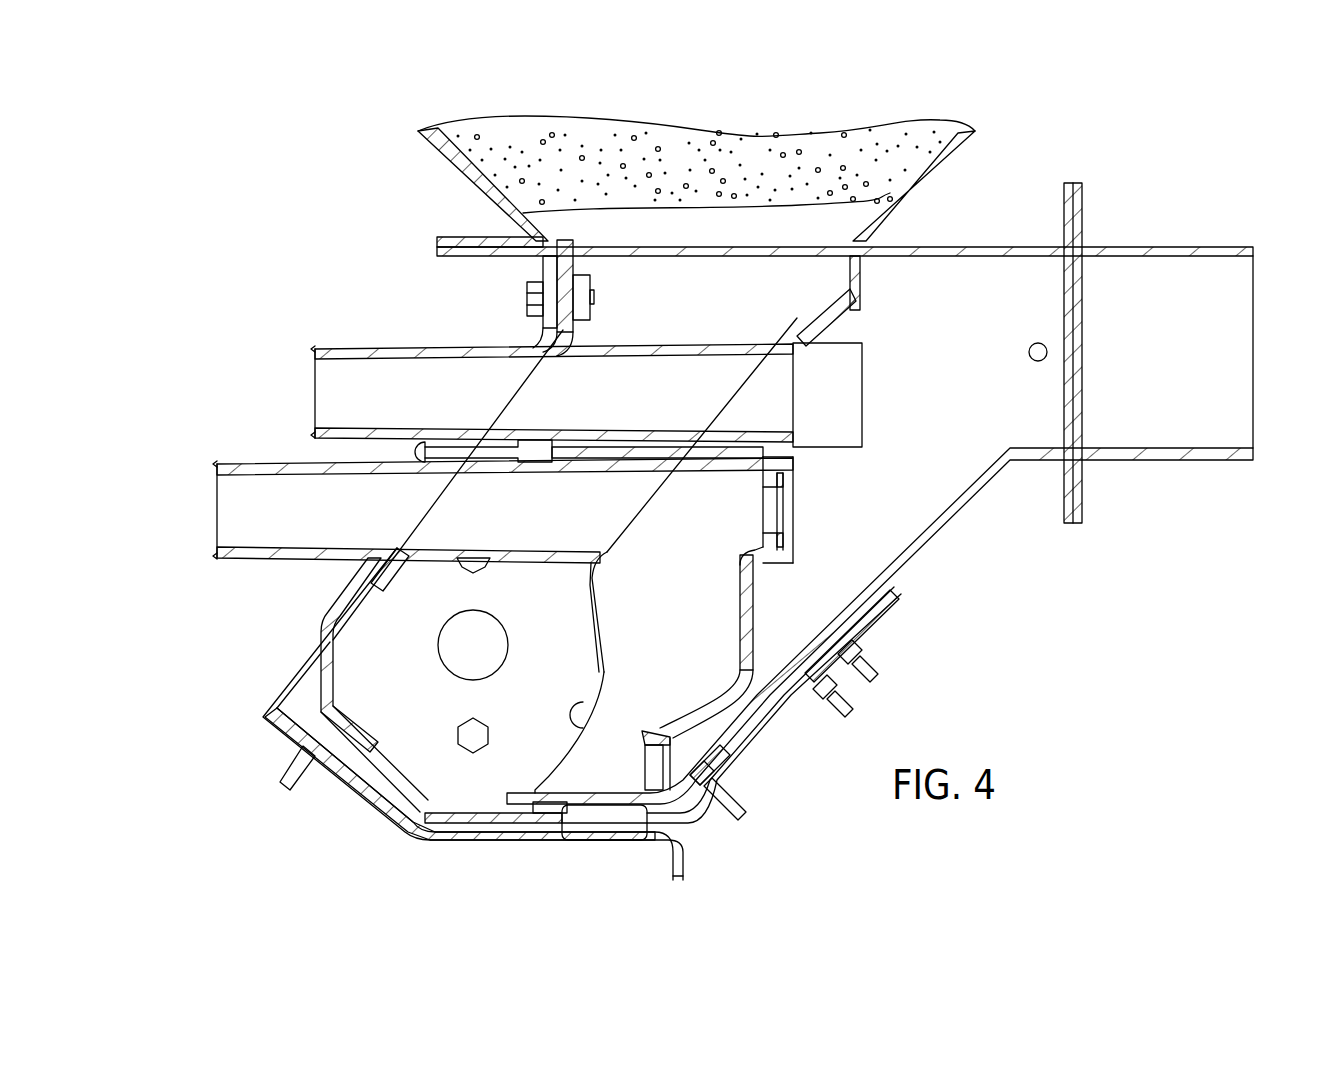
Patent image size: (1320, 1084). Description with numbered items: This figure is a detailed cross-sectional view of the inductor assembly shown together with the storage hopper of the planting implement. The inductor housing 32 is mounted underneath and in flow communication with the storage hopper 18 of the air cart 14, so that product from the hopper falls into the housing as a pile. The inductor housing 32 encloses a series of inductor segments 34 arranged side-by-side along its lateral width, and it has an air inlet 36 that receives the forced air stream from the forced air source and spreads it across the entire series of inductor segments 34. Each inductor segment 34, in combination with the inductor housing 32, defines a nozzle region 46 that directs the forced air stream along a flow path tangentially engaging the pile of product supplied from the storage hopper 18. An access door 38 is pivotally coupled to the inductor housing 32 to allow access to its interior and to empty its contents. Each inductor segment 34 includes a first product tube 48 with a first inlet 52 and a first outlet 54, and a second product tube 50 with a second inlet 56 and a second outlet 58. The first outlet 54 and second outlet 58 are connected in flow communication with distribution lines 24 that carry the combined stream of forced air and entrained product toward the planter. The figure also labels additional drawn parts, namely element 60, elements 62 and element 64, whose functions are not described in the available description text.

The air cart 14 is at (845, 461).
The storage hopper 18 is at (942, 173).
The distribution lines 24 is at (340, 464).
The inductor housing 32 is at (1030, 248).
The inductor segments 34 is at (539, 456).
The air inlet 36 is at (880, 493).
The access door 38 is at (345, 797).
The nozzle region 46 is at (696, 742).
The first product tube 48 is at (792, 541).
The second product tube 50 is at (862, 383).
The first inlet 52 is at (763, 511).
The first outlet 54 is at (217, 510).
The second inlet 56 is at (846, 420).
The second outlet 58 is at (316, 393).
The mounting plate 60 is at (777, 717).
The bolts 62 is at (868, 666).
The tab 64 is at (672, 752).